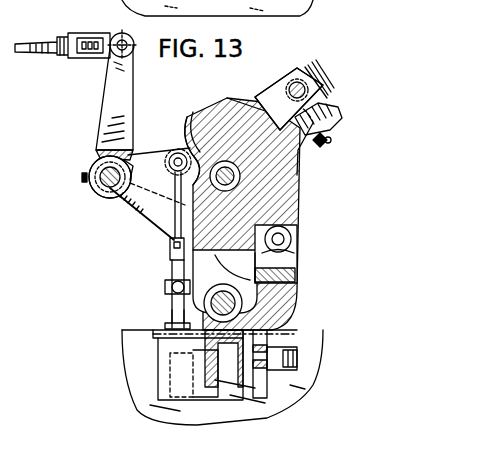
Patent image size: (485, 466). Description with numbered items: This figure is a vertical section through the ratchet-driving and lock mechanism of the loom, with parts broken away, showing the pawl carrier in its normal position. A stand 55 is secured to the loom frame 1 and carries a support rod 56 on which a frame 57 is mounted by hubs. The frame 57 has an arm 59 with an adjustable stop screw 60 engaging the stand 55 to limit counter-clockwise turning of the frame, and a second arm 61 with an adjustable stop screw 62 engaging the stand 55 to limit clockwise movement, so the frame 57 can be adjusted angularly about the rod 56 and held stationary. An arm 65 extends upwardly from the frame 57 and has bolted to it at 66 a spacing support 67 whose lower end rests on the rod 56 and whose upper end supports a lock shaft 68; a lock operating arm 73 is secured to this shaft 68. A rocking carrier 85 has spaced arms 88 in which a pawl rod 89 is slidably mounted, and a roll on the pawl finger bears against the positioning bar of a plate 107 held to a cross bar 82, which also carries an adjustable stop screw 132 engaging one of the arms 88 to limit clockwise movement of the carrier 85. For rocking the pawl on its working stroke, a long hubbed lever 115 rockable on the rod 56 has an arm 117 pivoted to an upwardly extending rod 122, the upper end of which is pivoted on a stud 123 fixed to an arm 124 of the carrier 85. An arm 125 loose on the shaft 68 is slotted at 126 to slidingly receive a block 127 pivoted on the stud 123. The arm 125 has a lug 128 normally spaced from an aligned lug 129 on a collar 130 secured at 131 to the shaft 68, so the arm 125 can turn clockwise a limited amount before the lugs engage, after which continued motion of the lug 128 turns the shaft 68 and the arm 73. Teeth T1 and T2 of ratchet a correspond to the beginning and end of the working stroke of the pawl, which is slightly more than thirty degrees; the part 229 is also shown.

The loom frame 1 is at (307, 385).
The stand 55 is at (132, 357).
The support rod 56 is at (236, 291).
The frame 57 is at (296, 272).
The arm 59 is at (164, 288).
The adjustable stop screw 60 is at (172, 318).
The second arm 61 is at (262, 338).
The adjustable stop screw 62 is at (297, 353).
The arm 65 is at (290, 255).
The bolt 66 is at (295, 232).
The spacing support 67 is at (173, 253).
The lock shaft 68 is at (93, 162).
The lock operating arm 73 is at (108, 93).
The cross bar 82 is at (323, 112).
The rocking carrier 85 is at (308, 72).
The arms 88 is at (280, 102).
The pawl rod 89 is at (295, 81).
The plate 107 is at (305, 153).
The long hubbed lever 115 is at (288, 307).
The arm 117 is at (197, 293).
The rod 122 is at (170, 252).
The stud 123 is at (152, 193).
The arm 124 is at (187, 113).
The arm 125 is at (130, 213).
The slot 126 is at (174, 152).
The block 127 is at (165, 150).
The lug 128 is at (100, 148).
The lug 129 is at (115, 197).
The collar 130 is at (95, 193).
The securing point 131 is at (82, 177).
The adjustable stop screw 132 is at (329, 139).
The sensor plug 229 is at (35, 45).
The tooth T1 is at (214, 122).
The tooth T2 is at (237, 98).
The ratchet a is at (297, 192).